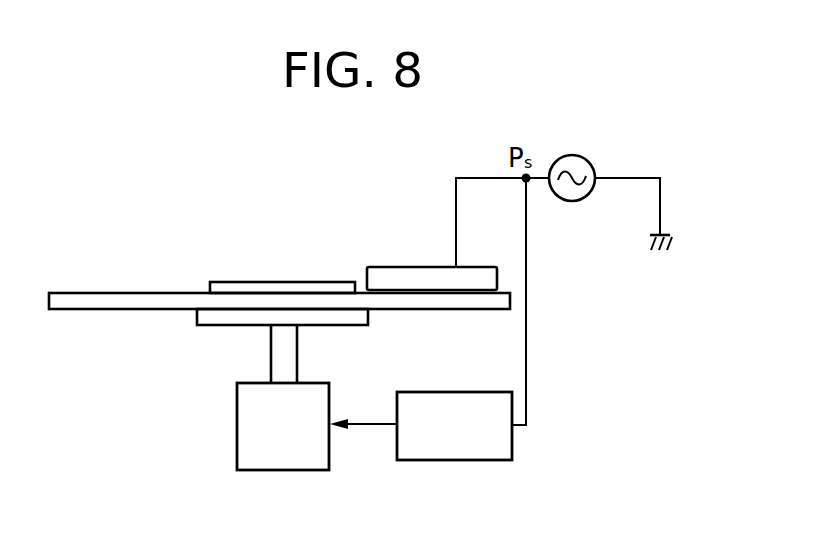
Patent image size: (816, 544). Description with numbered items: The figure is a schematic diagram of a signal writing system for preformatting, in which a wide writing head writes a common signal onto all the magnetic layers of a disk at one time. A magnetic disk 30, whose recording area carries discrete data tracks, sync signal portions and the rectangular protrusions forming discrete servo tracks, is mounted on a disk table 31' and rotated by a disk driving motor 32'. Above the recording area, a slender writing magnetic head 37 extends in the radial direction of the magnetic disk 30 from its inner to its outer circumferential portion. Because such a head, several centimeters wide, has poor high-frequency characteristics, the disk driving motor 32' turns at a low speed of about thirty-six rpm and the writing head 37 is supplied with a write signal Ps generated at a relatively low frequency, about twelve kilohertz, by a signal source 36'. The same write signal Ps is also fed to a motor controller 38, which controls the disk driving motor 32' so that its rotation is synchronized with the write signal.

The magnetic disk 30 is at (143, 293).
The disk table 31' is at (265, 329).
The disk driving motor 32' is at (244, 397).
The signal source 36' is at (599, 181).
The slender writing magnetic head 37 is at (393, 273).
The motor controller 38 is at (436, 392).